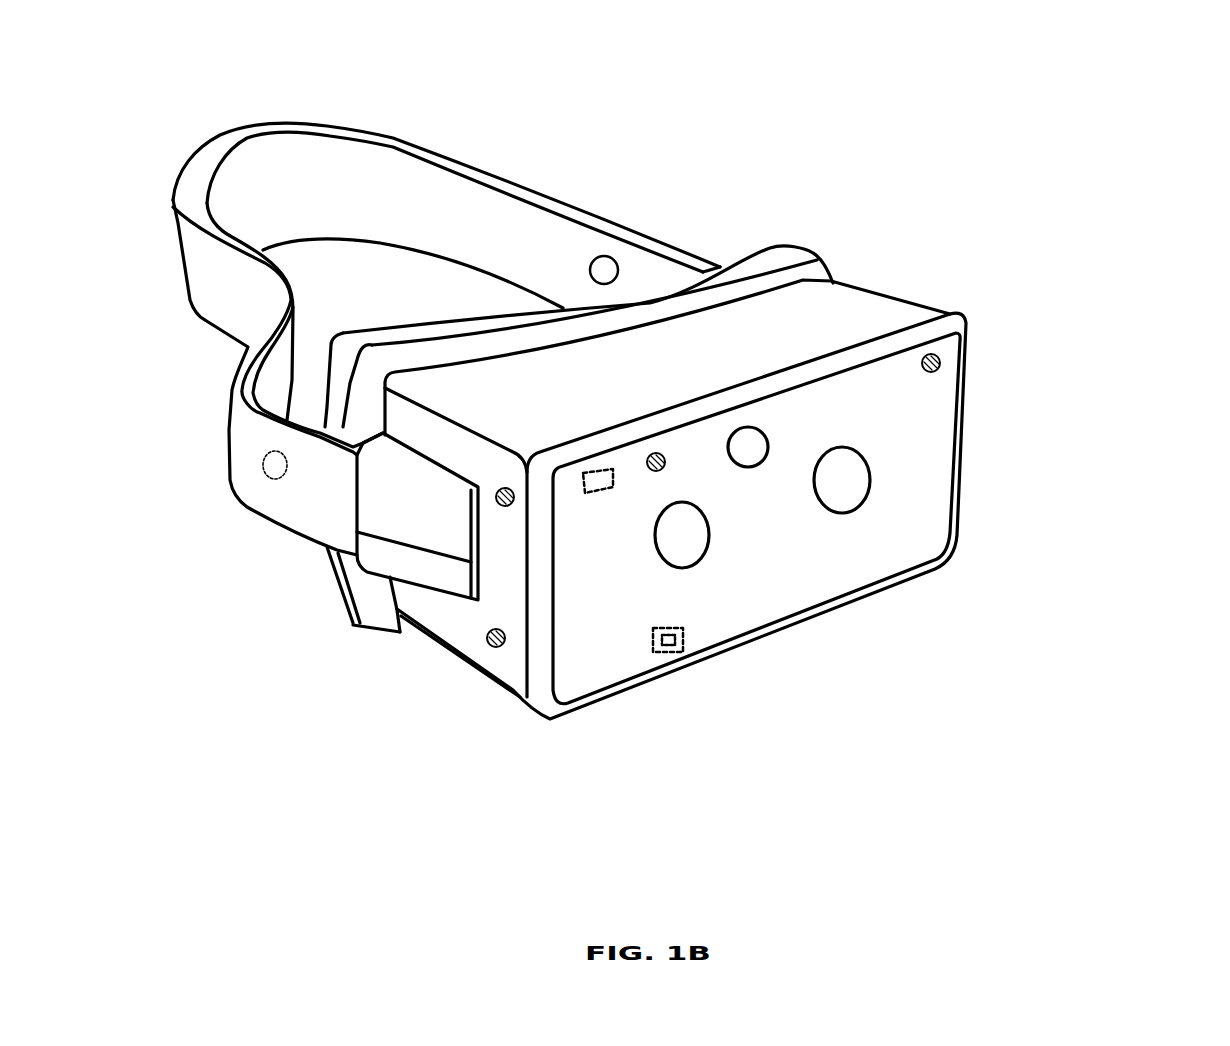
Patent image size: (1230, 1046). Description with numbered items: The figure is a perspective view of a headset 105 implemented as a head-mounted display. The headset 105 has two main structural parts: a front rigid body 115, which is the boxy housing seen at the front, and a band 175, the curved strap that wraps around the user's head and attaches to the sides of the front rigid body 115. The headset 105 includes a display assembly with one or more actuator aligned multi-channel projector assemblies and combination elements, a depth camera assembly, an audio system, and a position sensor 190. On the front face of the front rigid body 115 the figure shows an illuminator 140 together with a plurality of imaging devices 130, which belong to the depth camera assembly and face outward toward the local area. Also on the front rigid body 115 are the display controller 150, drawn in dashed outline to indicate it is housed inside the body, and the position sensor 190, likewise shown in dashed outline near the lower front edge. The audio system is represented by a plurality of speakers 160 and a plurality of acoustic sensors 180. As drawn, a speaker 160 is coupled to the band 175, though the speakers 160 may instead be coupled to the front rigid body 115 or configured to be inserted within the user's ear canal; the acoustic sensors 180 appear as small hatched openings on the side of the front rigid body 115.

The headset 105 is at (258, 92).
The band 175 is at (578, 207).
The front rigid body 115 is at (965, 317).
The illuminator 140 is at (759, 430).
The imaging device 130 is at (703, 553).
The display controller 150 is at (585, 493).
The position sensor 190 is at (683, 636).
The speaker 160 is at (263, 477).
The acoustic sensor 180 is at (483, 637).